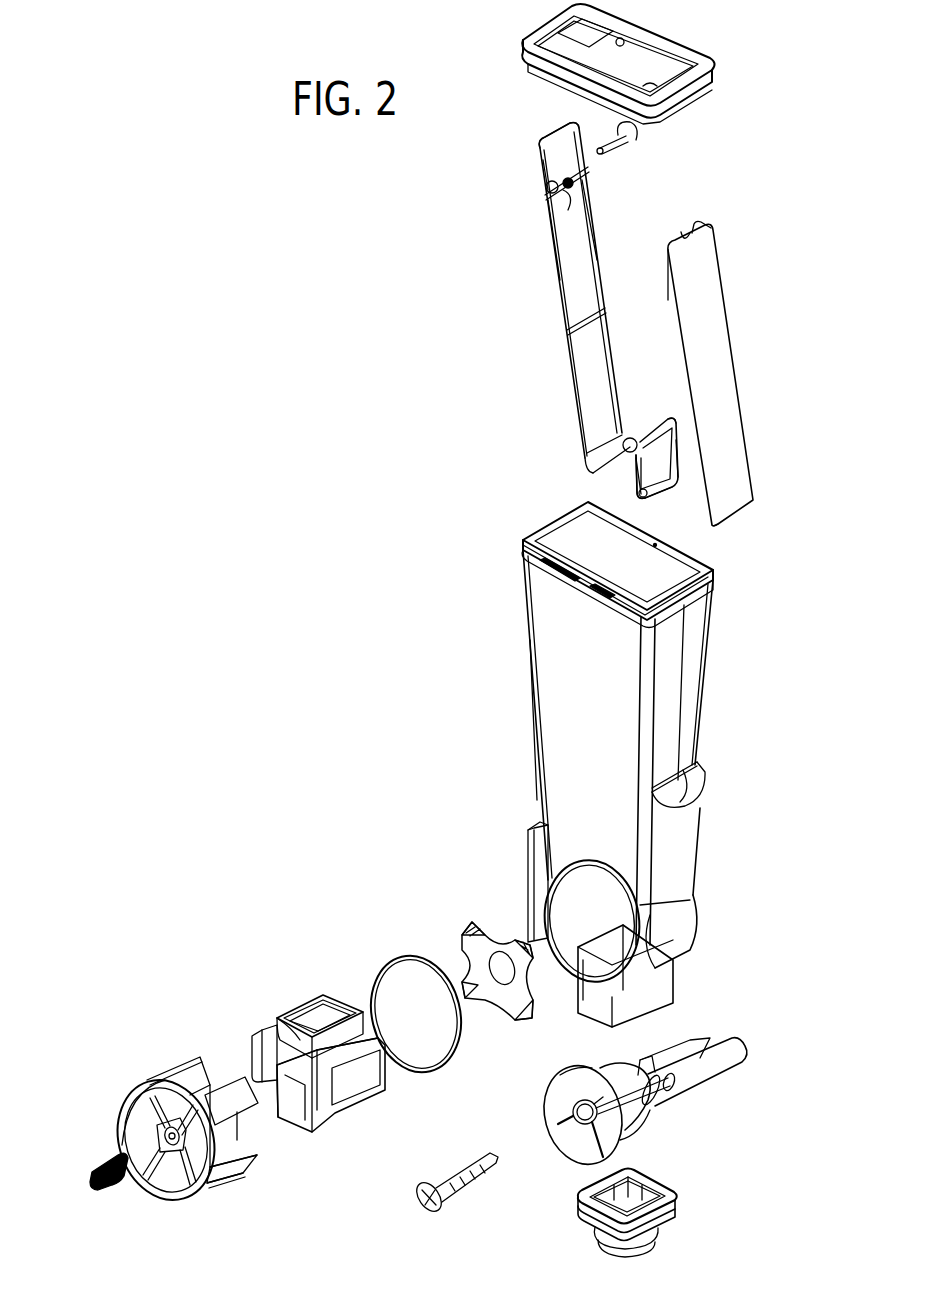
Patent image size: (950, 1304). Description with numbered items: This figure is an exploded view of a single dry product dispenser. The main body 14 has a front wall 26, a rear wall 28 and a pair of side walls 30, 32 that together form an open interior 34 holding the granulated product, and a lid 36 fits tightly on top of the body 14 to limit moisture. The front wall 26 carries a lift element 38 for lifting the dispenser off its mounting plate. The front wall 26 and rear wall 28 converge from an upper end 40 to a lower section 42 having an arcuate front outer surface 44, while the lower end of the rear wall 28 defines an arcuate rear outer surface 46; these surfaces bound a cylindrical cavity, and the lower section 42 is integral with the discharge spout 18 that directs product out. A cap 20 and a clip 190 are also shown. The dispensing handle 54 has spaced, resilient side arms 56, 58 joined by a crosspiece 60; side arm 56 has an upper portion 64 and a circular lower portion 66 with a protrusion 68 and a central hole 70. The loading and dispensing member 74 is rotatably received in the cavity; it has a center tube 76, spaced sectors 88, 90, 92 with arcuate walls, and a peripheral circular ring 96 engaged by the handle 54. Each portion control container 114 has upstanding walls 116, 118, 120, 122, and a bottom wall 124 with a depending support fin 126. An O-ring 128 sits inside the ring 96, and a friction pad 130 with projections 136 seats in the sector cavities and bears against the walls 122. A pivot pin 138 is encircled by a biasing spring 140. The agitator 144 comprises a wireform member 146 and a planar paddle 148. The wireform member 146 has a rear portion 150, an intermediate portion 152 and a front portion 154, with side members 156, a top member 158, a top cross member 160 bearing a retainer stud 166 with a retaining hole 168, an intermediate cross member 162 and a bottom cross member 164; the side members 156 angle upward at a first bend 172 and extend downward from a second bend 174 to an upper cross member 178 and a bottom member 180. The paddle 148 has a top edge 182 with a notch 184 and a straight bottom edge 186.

The main body 14 is at (722, 752).
The discharge spout 18 is at (665, 990).
The cap 20 is at (665, 1220).
The front wall 26 is at (700, 680).
The rear wall 28 is at (552, 545).
The side wall 30 is at (562, 690).
The side wall 32 is at (505, 968).
The open interior 34 is at (560, 574).
The lid 36 is at (655, 35).
The lift element 38 is at (700, 790).
The upper end 40 is at (700, 602).
The lower section 42 is at (710, 915).
The arcuate front outer surface 44 is at (685, 942).
The arcuate rear outer surface 46 is at (560, 975).
The dispensing handle 54 is at (656, 1103).
The side arm 56 is at (640, 1117).
The side arm 58 is at (690, 1053).
The crosspiece 60 is at (735, 1052).
The upper portion 64 is at (632, 1086).
The circular lower portion 66 is at (560, 1090).
The protrusion 68 is at (585, 1140).
The central hole 70 is at (572, 1113).
The loading and dispensing member 74 is at (193, 1220).
The center tube 76 is at (160, 1140).
The sector 88 is at (178, 1065).
The sector 90 is at (240, 1182).
The sector 92 is at (236, 1180).
The peripheral circular ring 96 is at (128, 1080).
The portion control container 114 is at (300, 995).
The upstanding wall 116 is at (290, 1030).
The upstanding wall 118 is at (355, 1095).
The upstanding wall 120 is at (280, 1048).
The upstanding wall 122 is at (312, 1020).
The bottom wall 124 is at (528, 842).
The support fin 126 is at (287, 1105).
The O-ring 128 is at (420, 1073).
The friction pad 130 is at (505, 930).
The projections 136 is at (470, 928).
The pivot pin 138 is at (455, 1190).
The biasing spring 140 is at (110, 1182).
The agitator 144 is at (722, 205).
The wireform member 146 is at (532, 353).
The paddle 148 is at (752, 350).
The rear portion 150 is at (558, 313).
The intermediate portion 152 is at (607, 475).
The front portion 154 is at (686, 494).
The side members 156 is at (596, 236).
The top member 158 is at (558, 140).
The top cross member 160 is at (575, 185).
The intermediate cross member 162 is at (585, 320).
The bottom cross member 164 is at (606, 440).
The retainer stud 166 is at (567, 192).
The retaining hole 168 is at (560, 183).
The first bend 172 is at (592, 475).
The second bend 174 is at (675, 418).
The upper cross member 178 is at (680, 450).
The bottom member 180 is at (672, 490).
The top edge 182 is at (683, 235).
The notch 184 is at (700, 234).
The straight bottom edge 186 is at (745, 512).
The clip 190 is at (605, 150).